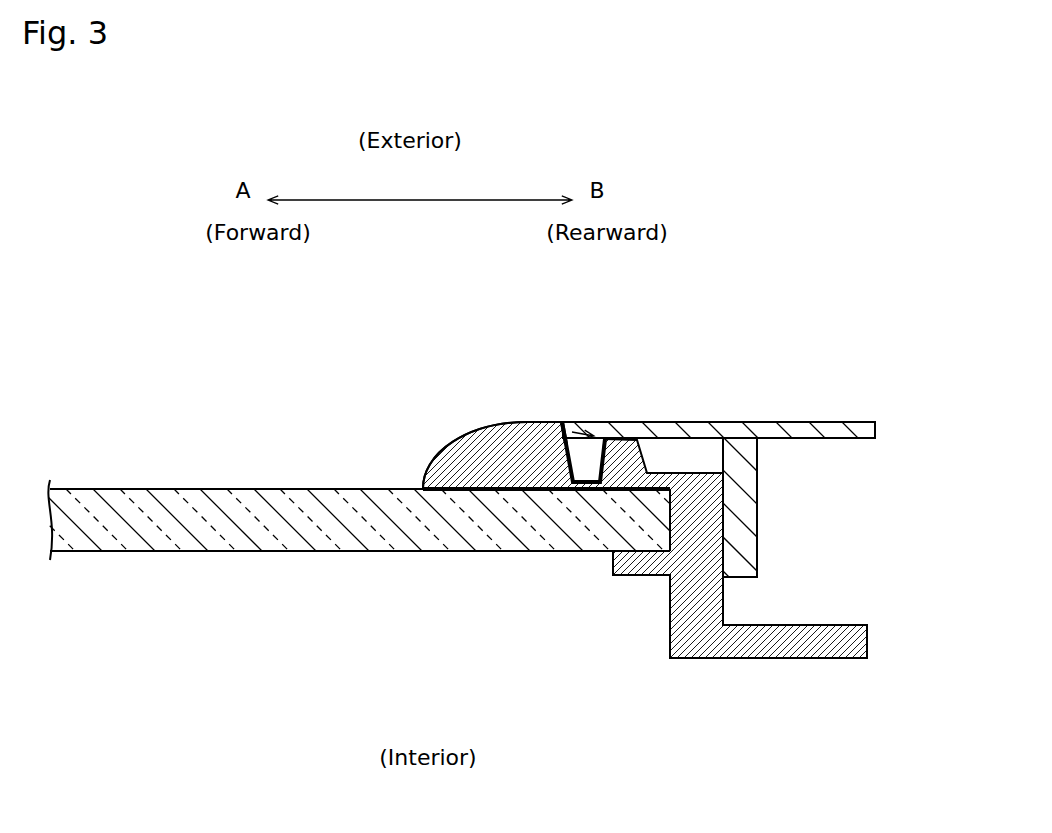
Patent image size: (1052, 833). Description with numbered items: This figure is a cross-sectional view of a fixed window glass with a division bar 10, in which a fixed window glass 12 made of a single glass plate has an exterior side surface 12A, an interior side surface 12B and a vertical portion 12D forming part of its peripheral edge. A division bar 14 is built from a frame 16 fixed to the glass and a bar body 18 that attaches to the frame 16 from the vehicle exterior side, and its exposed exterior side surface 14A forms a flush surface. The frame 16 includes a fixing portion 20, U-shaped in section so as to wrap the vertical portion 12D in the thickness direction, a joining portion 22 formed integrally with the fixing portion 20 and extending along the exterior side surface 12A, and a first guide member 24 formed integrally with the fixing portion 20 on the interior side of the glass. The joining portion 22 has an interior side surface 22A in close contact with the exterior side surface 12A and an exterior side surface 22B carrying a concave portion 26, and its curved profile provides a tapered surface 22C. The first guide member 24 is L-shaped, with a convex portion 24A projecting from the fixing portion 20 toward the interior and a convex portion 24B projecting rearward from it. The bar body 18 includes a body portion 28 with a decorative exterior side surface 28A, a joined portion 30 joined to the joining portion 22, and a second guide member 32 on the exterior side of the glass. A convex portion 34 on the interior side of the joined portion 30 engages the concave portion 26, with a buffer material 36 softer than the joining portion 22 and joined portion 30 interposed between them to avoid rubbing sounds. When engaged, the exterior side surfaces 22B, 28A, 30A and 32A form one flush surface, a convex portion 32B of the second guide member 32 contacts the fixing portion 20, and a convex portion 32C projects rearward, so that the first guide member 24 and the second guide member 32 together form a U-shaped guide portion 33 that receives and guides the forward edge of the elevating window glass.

The fixed window glass with a division bar 10 is at (714, 279).
The fixed window glass 12 is at (182, 474).
The exterior side surface 12A is at (270, 489).
The interior side surface 12B is at (270, 551).
The vertical portion 12D is at (672, 518).
The division bar 14 is at (766, 361).
The exterior side surface 14A is at (559, 412).
The frame 16 is at (680, 676).
The bar body 18 is at (870, 400).
The fixing portion 20 is at (700, 507).
The joining portion 22 is at (468, 476).
The interior side surface 22A is at (538, 490).
The exterior side surface 22B is at (548, 427).
The tapered surface 22C is at (440, 460).
The first guide member 24 is at (774, 688).
The convex portion 24A is at (673, 625).
The convex portion 24B is at (828, 650).
The concave portion 26 is at (590, 474).
The body portion 28 is at (681, 404).
The exterior side surface 28A is at (728, 437).
The joined portion 30 is at (560, 428).
The exterior side surface 30A is at (577, 420).
The second guide member 32 is at (841, 380).
The exterior side surface 32A is at (808, 437).
The convex portion 32B is at (755, 565).
The convex portion 32C is at (807, 430).
The guide portion 33 is at (872, 504).
The convex portion 34 is at (563, 482).
The buffer material 36 is at (605, 470).